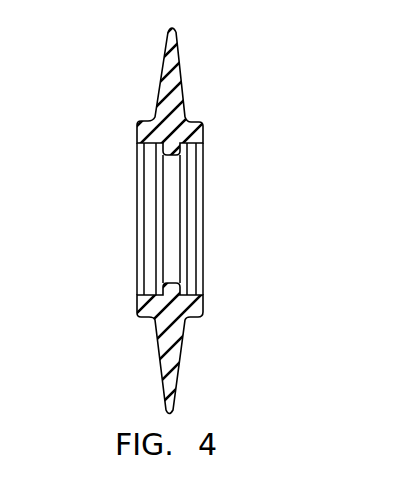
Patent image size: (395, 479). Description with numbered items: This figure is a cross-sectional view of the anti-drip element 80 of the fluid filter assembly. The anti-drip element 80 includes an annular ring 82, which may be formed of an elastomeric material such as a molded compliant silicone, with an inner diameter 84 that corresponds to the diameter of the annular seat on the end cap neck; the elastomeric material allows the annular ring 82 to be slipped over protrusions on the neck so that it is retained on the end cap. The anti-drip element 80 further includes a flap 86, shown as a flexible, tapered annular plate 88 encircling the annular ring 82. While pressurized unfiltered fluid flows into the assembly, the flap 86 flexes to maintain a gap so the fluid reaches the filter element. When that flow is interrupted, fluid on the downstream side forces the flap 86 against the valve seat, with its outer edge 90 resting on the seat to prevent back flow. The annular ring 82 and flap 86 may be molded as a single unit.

The anti-drip element 80 is at (90, 272).
The annular ring 82 is at (147, 121).
The inner diameter 84 is at (166, 172).
The flap 86 is at (182, 73).
The tapered annular plate 88 is at (158, 348).
The outer edge 90 is at (170, 28).